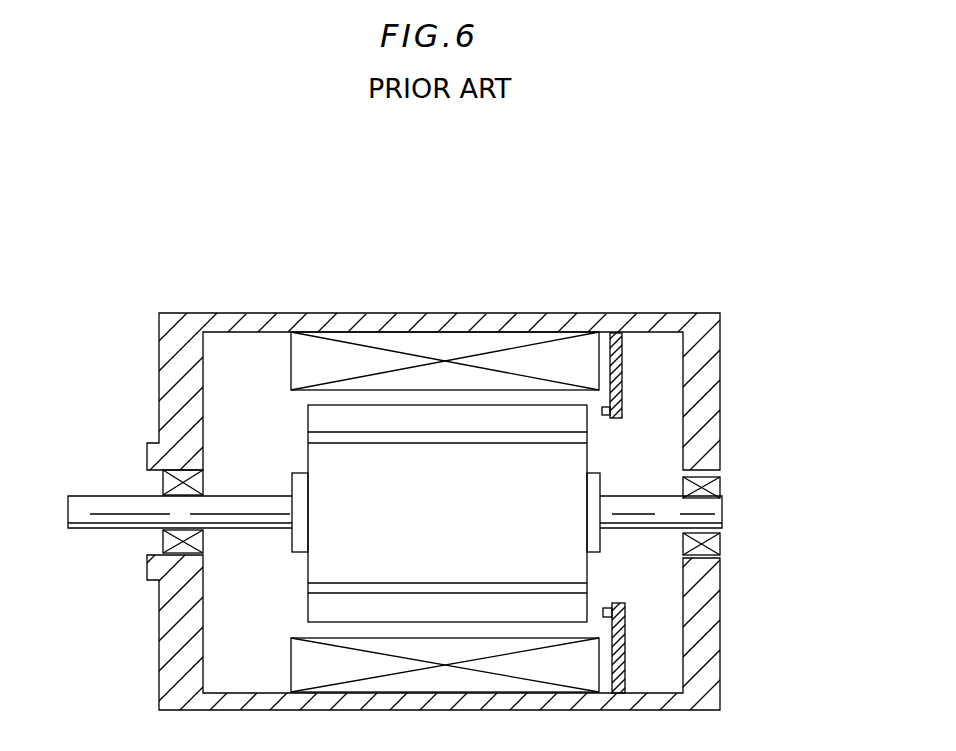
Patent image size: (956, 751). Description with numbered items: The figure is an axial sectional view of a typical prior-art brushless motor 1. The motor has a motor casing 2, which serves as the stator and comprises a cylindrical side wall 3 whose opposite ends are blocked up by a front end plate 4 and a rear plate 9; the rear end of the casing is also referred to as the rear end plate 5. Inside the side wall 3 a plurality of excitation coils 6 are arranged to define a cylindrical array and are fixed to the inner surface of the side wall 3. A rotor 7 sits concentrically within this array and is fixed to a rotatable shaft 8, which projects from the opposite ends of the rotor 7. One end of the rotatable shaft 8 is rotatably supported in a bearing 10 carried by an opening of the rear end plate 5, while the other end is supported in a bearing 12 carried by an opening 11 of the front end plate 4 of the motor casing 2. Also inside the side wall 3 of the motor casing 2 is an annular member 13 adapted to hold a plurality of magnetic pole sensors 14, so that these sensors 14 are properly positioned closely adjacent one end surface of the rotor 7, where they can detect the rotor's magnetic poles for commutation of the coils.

The brushless motor 1 is at (682, 290).
The motor casing 2 is at (710, 309).
The cylindrical side wall 3 is at (622, 322).
The front end plate 4 is at (167, 415).
The rear end plate 5 is at (708, 435).
The excitation coils 6 is at (400, 342).
The rotor 7 is at (328, 556).
The rotatable shaft 8 is at (113, 520).
The rear plate 9 is at (720, 538).
The bearing 10 is at (720, 485).
The opening 11 is at (158, 553).
The bearing 12 is at (197, 487).
The annular member 13 is at (615, 387).
The magnetic pole sensors 14 is at (607, 415).